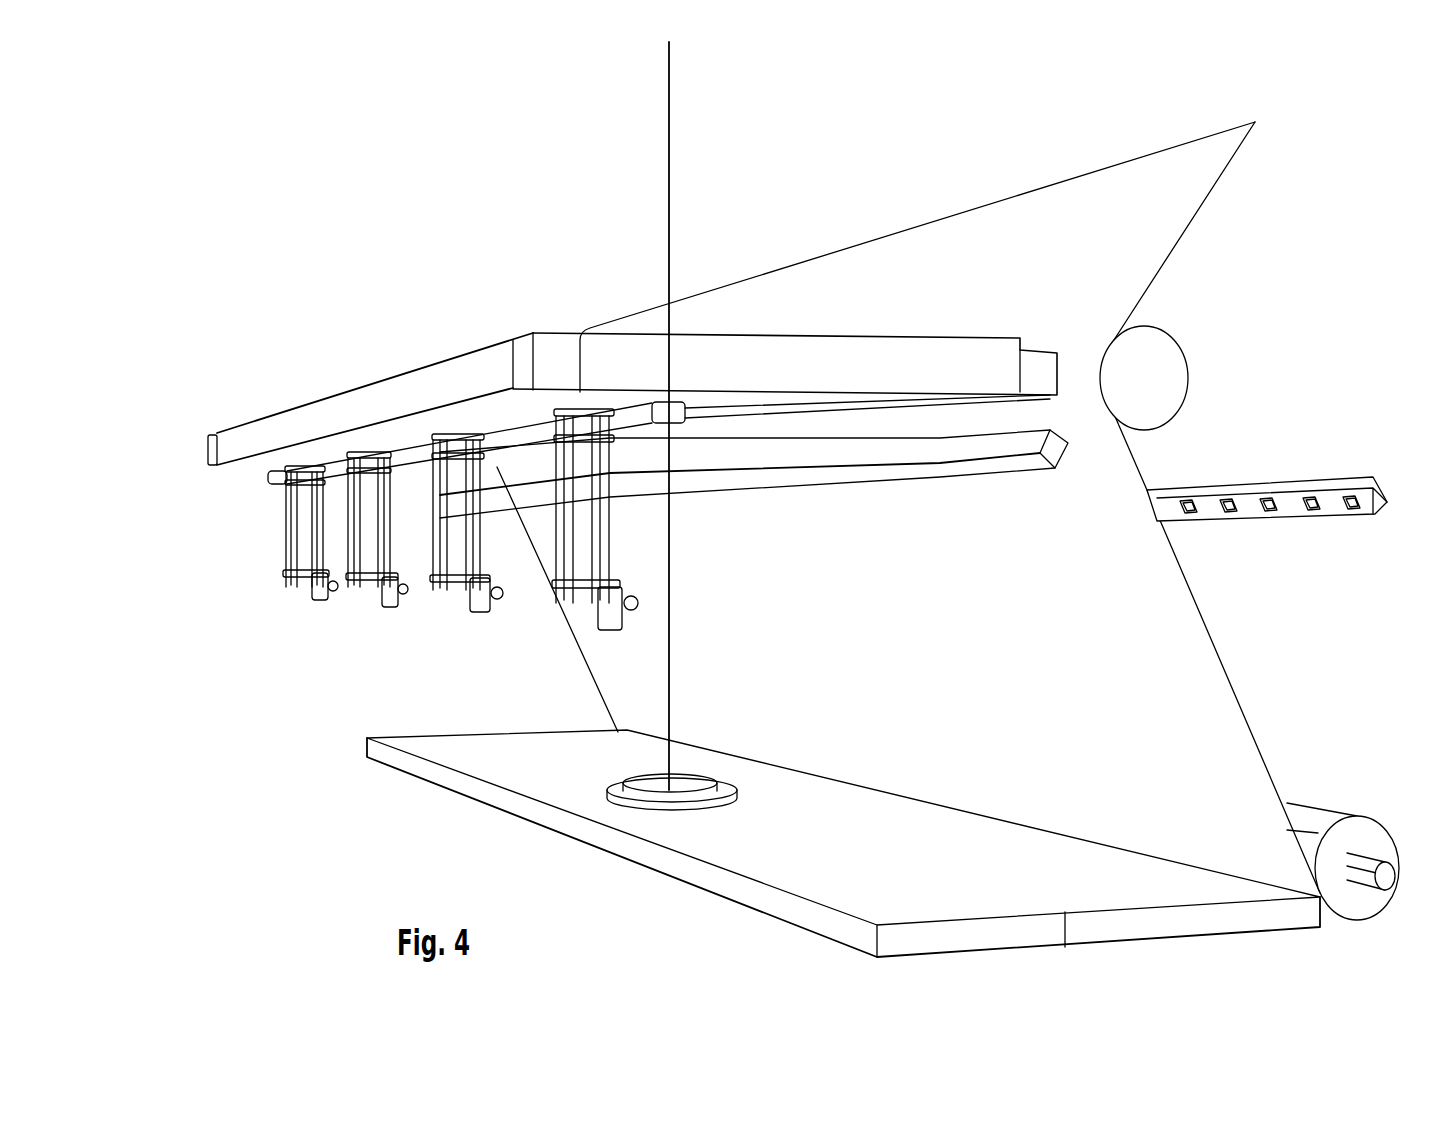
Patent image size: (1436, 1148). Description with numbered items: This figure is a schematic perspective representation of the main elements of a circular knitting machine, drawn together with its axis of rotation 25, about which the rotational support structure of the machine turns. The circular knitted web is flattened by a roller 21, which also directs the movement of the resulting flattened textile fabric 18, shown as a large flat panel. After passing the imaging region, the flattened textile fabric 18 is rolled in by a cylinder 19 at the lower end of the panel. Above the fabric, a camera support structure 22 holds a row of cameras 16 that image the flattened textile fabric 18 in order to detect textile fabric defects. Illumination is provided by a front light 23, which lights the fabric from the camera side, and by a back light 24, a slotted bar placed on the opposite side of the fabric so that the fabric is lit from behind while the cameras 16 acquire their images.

The cameras 16 is at (462, 619).
The flattened textile fabric 18 is at (1003, 654).
The cylinder 19 is at (1358, 813).
The roller 21 is at (1195, 365).
The camera support structure 22 is at (280, 518).
The front light 23 is at (845, 492).
The back light 24 is at (1327, 519).
The axis of rotation 25 is at (655, 132).